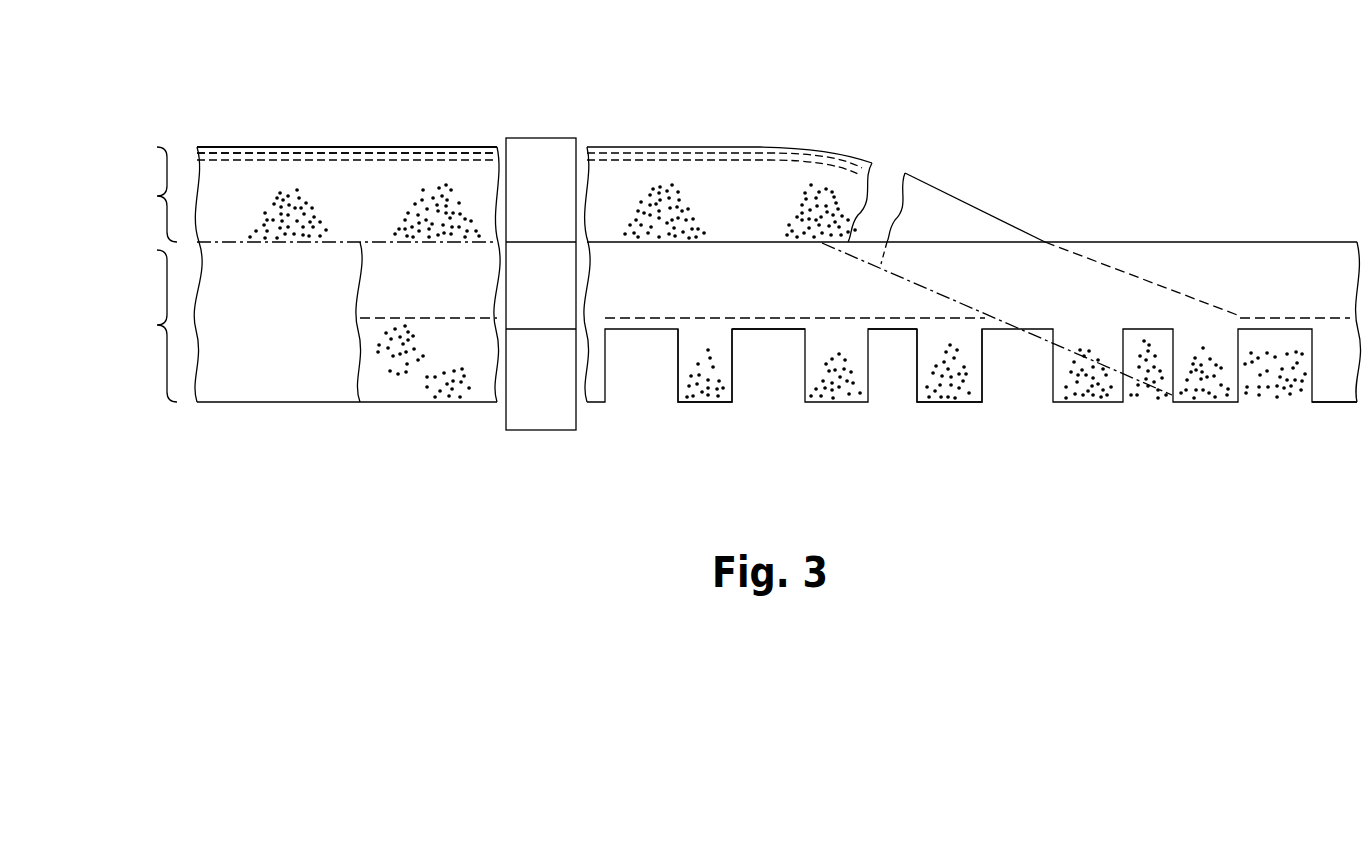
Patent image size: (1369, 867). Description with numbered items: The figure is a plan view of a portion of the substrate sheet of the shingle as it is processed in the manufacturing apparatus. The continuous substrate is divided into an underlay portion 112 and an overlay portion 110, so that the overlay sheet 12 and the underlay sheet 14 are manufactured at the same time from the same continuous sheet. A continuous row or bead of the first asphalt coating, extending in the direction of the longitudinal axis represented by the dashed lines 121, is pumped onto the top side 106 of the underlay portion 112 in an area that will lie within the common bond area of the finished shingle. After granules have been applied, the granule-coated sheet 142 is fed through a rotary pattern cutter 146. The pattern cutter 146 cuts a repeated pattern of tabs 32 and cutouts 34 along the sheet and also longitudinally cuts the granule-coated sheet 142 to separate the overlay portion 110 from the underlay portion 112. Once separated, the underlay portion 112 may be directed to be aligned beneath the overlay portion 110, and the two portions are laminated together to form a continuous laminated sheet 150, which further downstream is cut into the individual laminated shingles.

The overlay sheet 12 is at (974, 366).
The underlay sheet 14 is at (1006, 222).
The tabs 32 is at (712, 395).
The cutouts 34 is at (767, 366).
The top side 106 is at (352, 185).
The overlay portion 110 is at (300, 322).
The underlay portion 112 is at (300, 194).
The dashed lines 121 is at (424, 157).
The granule-coated sheet 142 is at (237, 124).
The rotary pattern cutter 146 is at (538, 410).
The continuous laminated sheet 150 is at (1324, 416).